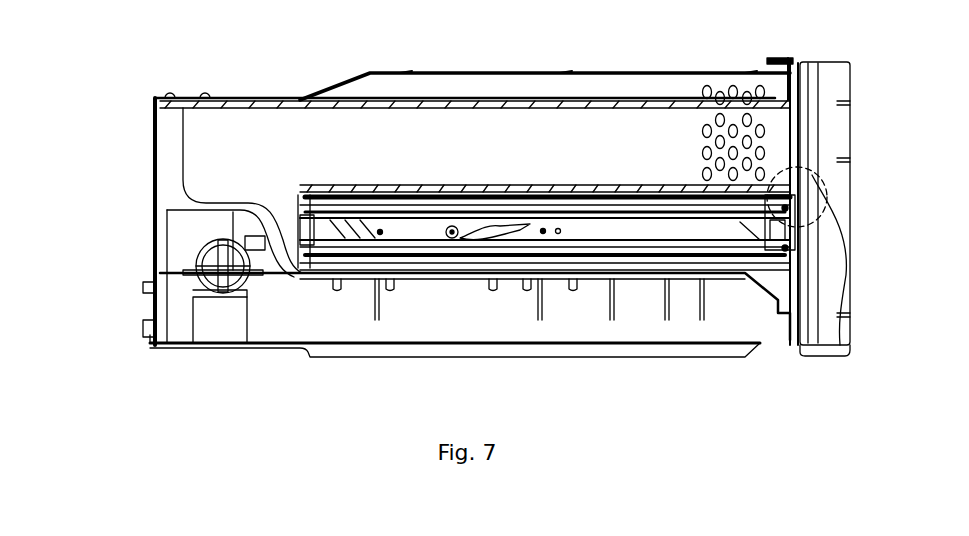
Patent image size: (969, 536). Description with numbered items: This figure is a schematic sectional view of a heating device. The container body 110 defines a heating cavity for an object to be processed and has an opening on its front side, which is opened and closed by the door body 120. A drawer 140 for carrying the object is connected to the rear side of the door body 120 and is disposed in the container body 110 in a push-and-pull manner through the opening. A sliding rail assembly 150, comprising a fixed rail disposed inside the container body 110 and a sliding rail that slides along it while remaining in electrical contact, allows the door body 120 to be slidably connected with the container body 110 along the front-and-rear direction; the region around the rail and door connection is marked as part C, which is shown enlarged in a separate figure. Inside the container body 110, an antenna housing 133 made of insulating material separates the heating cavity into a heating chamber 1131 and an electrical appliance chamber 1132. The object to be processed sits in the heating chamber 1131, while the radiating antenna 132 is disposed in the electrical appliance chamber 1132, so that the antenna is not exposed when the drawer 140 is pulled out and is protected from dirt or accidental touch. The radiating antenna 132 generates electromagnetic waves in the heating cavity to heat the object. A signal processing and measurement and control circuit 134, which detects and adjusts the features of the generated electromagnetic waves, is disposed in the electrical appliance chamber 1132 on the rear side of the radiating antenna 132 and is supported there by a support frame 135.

The container body 110 is at (499, 66).
The door body 120 is at (818, 55).
The drawer 140 is at (246, 125).
The sliding rail assembly 150 is at (440, 176).
The heating chamber 1131 is at (177, 192).
The signal processing and measurement and control circuit 134 is at (178, 258).
The support frame 135 is at (203, 322).
The electrical appliance chamber 1132 is at (285, 323).
The radiating antenna 132 is at (613, 275).
The antenna housing 133 is at (703, 275).
The part C is at (742, 183).